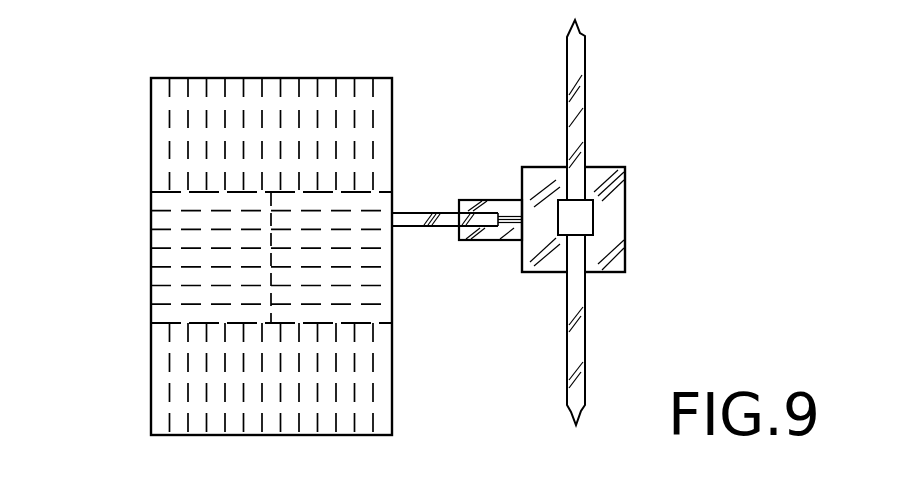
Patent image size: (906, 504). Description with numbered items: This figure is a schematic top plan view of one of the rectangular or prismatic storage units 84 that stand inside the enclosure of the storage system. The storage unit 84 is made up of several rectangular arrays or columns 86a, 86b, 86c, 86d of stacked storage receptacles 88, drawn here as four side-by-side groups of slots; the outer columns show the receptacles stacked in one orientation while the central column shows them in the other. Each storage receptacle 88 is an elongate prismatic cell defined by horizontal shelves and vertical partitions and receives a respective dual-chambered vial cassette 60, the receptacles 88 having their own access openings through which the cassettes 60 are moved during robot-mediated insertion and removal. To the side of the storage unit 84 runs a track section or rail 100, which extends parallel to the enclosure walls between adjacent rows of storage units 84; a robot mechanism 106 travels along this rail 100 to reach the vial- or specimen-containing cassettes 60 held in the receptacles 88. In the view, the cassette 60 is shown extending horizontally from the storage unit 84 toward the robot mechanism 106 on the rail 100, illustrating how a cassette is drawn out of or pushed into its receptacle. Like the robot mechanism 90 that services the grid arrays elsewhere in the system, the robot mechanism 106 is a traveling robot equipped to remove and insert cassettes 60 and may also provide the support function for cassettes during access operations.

The prismatic storage unit 84 is at (178, 61).
The rectangular array or column 86a is at (150, 125).
The rectangular array or column 86b is at (150, 241).
The rectangular array or column 86c is at (150, 337).
The rectangular array or column 86d is at (394, 313).
The storage receptacle 88 is at (327, 122).
The robot mechanism 90 is at (310, 78).
The dual-chambered vial cassette 60 is at (414, 213).
The track section or rail 100 is at (577, 123).
The robot mechanism 106 is at (616, 212).